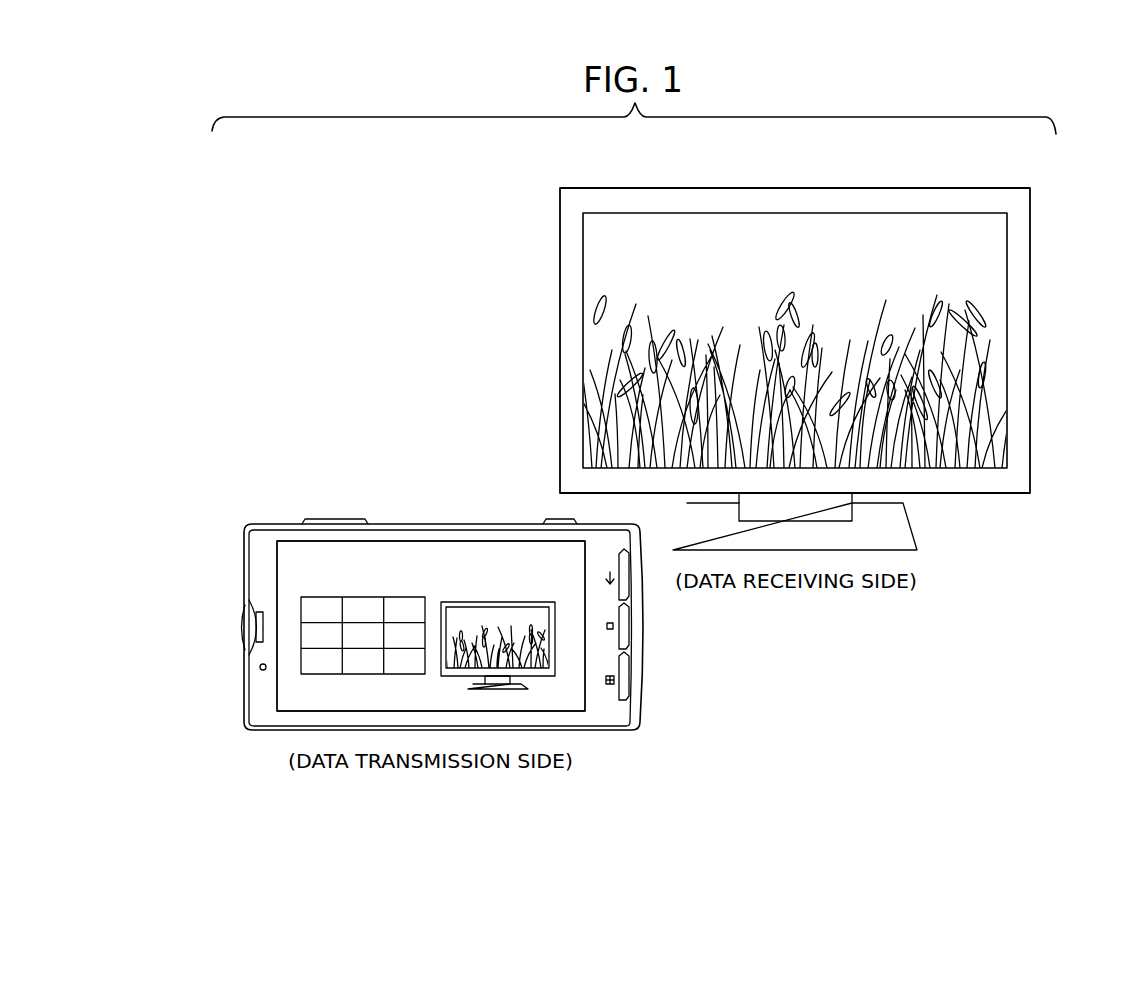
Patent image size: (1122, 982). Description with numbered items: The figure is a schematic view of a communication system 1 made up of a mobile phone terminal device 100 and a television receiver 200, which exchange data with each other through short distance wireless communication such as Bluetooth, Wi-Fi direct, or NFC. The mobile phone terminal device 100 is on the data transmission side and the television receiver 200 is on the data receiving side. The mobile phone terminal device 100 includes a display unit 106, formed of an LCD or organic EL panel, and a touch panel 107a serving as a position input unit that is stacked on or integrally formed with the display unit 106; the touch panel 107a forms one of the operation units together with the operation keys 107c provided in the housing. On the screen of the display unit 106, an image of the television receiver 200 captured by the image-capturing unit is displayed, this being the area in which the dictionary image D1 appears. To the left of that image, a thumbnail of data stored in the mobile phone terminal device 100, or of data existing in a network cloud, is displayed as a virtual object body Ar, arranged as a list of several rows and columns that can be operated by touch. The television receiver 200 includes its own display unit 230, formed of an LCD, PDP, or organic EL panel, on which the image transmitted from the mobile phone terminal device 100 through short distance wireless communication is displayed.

The communication system 1 is at (334, 206).
The mobile phone terminal device 100 is at (452, 617).
The display unit 106 is at (277, 691).
The touch panel 107a is at (277, 573).
The operation keys 107c is at (628, 682).
The television receiver 200 is at (771, 451).
The display unit 230 is at (1007, 333).
The dictionary image D1 is at (975, 452).
The virtual object body Ar is at (307, 684).